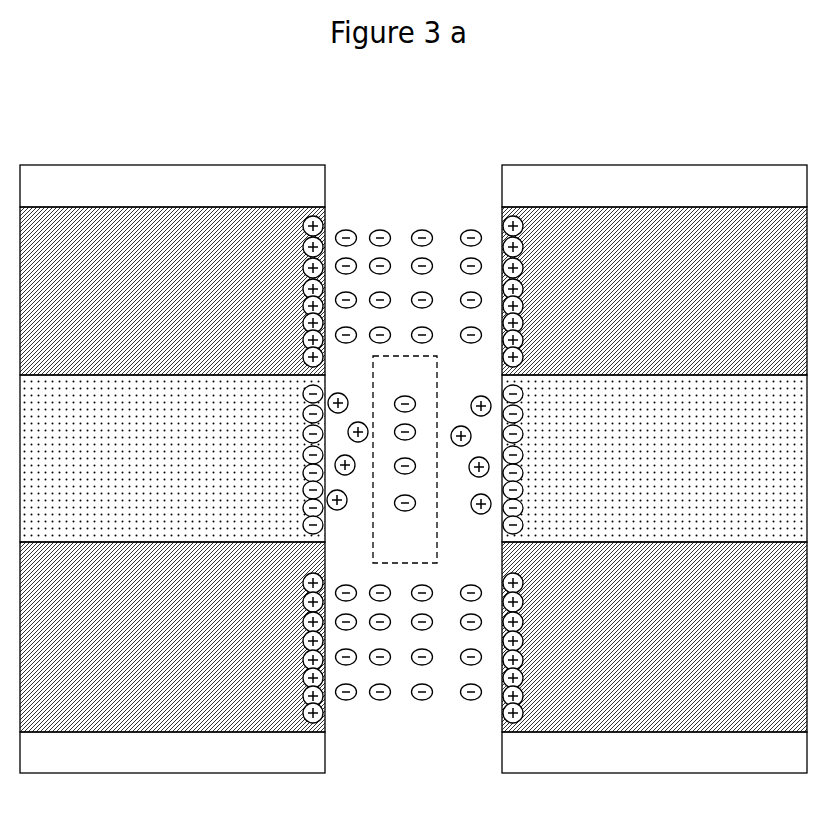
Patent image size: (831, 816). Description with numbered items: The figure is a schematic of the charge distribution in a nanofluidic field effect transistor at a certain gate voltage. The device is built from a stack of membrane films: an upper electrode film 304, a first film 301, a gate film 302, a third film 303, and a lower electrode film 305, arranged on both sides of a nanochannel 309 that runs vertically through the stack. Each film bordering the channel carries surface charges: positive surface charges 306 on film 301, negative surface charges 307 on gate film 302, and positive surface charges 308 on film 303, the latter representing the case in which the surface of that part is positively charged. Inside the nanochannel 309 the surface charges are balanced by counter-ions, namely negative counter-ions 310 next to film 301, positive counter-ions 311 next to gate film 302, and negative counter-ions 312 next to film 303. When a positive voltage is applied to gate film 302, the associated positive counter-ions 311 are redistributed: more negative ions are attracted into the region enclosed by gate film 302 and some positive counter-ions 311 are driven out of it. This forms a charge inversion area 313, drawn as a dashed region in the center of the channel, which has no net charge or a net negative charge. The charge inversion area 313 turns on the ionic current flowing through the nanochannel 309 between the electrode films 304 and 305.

The film 301 is at (413, 291).
The gate film 302 is at (413, 458).
The film 303 is at (413, 637).
The electrode film 304 is at (413, 186).
The electrode film 305 is at (413, 753).
The surface charges 306 is at (527, 268).
The surface charges 307 is at (523, 438).
The surface charges 308 is at (525, 603).
The nanochannel 309 is at (413, 415).
The counter-ions 310 is at (485, 310).
The counter-ions 311 is at (492, 472).
The counter-ions 312 is at (484, 662).
The charge inversion area 313 is at (378, 532).